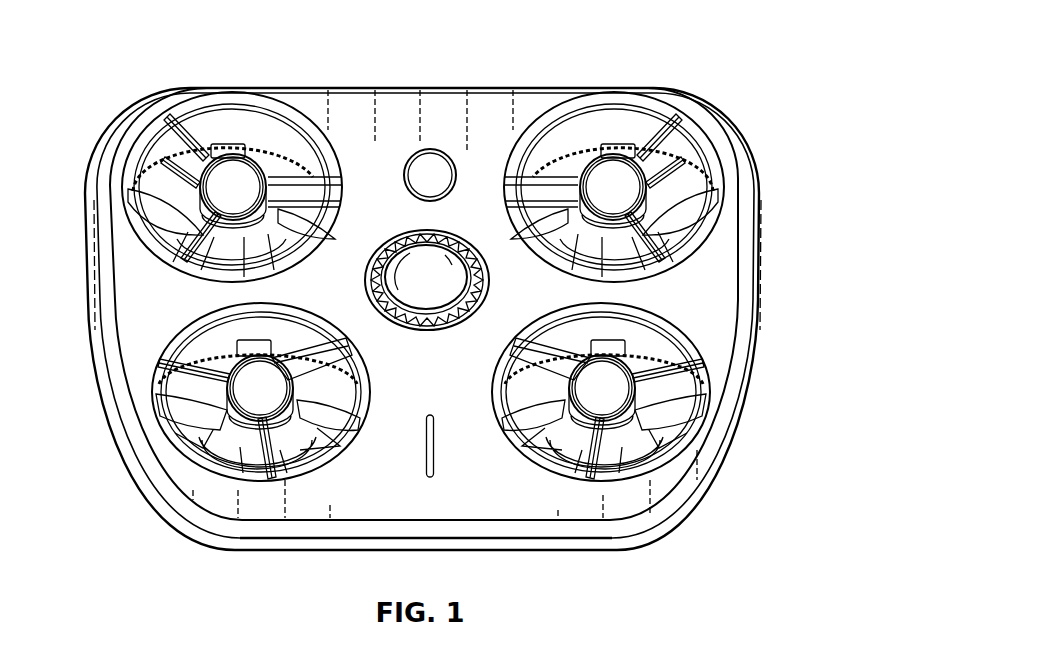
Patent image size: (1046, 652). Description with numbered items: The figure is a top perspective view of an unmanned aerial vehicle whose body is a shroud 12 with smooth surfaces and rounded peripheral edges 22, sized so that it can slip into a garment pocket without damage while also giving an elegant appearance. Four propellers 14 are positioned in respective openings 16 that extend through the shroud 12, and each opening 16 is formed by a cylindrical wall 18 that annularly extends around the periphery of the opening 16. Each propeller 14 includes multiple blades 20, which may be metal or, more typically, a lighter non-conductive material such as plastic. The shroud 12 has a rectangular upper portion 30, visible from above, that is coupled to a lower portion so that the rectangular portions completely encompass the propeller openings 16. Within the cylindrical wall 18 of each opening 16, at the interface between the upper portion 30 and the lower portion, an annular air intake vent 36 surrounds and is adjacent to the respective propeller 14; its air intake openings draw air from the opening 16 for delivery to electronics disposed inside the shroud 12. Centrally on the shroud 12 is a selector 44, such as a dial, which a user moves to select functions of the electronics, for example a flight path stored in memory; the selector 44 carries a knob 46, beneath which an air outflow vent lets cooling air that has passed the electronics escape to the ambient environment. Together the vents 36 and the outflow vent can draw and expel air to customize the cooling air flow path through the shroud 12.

The shroud 12 is at (515, 88).
The propeller 14 is at (238, 186).
The opening 16 is at (578, 167).
The cylindrical wall 18 is at (218, 128).
The blade 20 is at (688, 230).
The peripheral edge 22 is at (133, 118).
The rectangular upper portion 30 is at (466, 506).
The annular air intake vent 36 is at (149, 161).
The selector 44 is at (436, 291).
The knob 46 is at (407, 263).